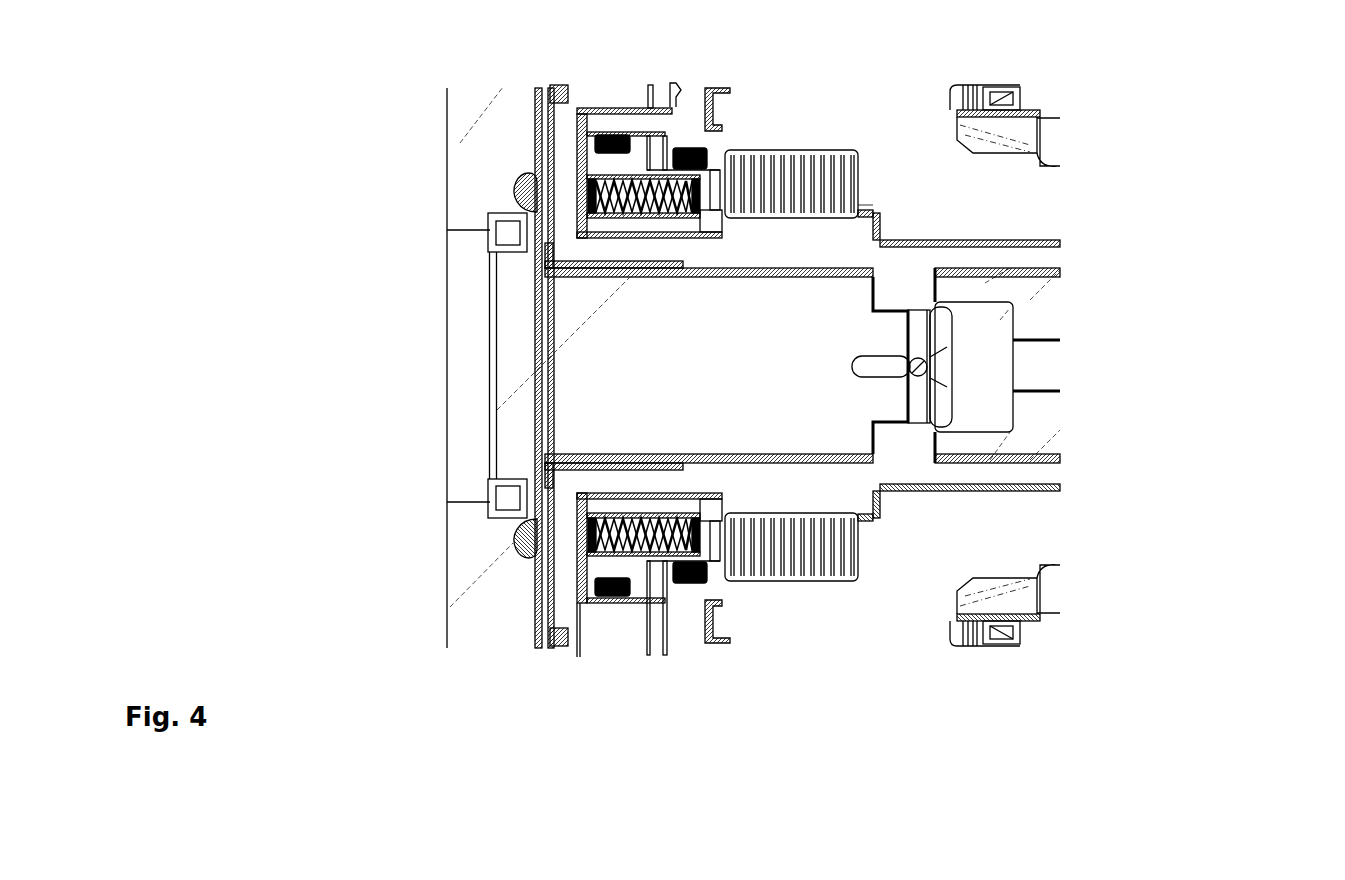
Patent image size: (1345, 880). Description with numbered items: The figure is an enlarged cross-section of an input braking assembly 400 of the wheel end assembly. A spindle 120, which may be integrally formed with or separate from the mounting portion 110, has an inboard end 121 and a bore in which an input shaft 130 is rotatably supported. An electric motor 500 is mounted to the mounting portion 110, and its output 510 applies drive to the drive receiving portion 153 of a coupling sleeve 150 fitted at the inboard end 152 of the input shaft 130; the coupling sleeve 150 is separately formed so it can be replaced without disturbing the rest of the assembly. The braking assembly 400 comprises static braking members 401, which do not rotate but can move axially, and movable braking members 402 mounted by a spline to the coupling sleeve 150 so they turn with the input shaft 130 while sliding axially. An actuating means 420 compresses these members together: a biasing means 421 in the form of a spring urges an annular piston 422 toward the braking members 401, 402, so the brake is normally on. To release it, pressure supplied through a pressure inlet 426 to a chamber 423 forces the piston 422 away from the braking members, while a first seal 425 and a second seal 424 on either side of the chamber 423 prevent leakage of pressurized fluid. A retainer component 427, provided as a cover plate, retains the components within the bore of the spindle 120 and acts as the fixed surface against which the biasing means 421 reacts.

The mounting portion 110 is at (707, 86).
The spindle 120 is at (905, 150).
The inboard end of the spindle 121 is at (827, 633).
The input shaft 130 is at (1056, 288).
The coupling sleeve 150 is at (1000, 463).
The inboard end of the input shaft 152 is at (572, 245).
The drive receiving portion 153 is at (823, 275).
The input braking assembly 400 is at (525, 582).
The static braking members 401 is at (850, 152).
The movable braking members 402 is at (792, 168).
The actuating means 420 is at (580, 648).
The biasing means 421 is at (588, 178).
The piston 422 is at (713, 545).
The chamber 423 is at (659, 134).
The second seal 424 is at (602, 133).
The first seal 425 is at (688, 147).
The pressure inlet 426 is at (657, 655).
The retainer component 427 is at (572, 150).
The electric motor 500 is at (483, 130).
The output 510 is at (660, 363).